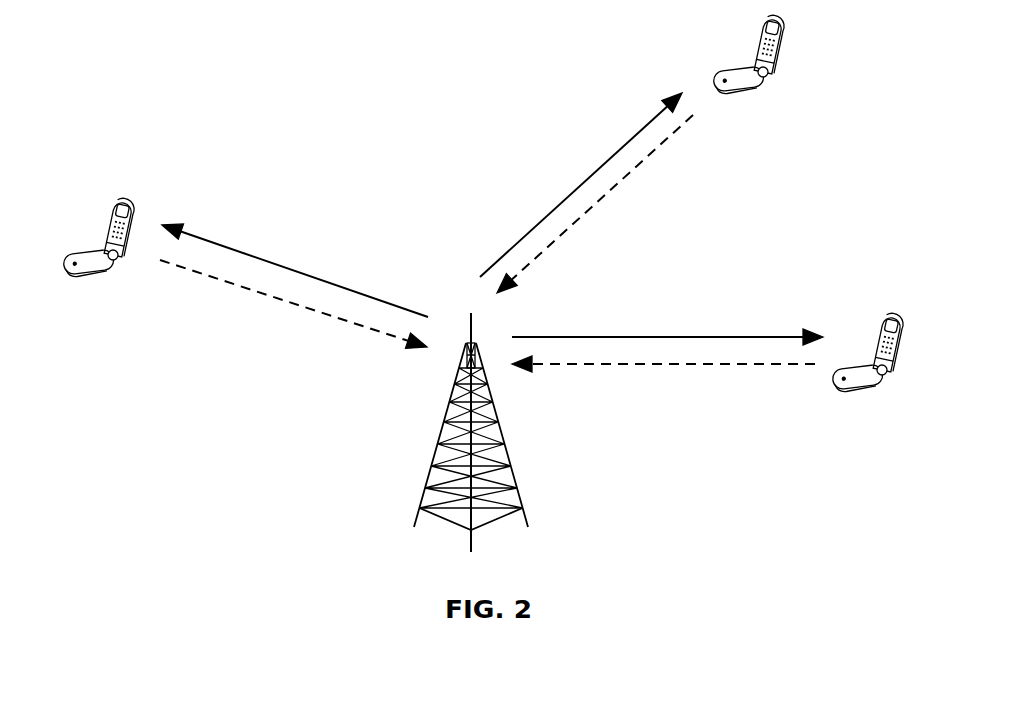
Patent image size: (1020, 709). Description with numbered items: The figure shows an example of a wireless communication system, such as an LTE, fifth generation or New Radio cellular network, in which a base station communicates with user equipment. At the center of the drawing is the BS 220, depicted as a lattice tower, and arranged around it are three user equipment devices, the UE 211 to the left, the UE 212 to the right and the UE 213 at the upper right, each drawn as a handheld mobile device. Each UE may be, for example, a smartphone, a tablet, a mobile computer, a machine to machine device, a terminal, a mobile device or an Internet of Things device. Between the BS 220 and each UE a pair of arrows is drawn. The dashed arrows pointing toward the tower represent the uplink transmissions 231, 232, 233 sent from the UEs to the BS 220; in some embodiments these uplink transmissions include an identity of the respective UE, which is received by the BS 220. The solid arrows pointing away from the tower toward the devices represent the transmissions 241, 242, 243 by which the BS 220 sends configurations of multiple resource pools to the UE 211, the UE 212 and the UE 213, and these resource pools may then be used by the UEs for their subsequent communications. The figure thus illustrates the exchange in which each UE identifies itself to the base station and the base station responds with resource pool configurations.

The user equipment 211 is at (112, 273).
The user equipment 212 is at (877, 387).
The user equipment 213 is at (762, 88).
The base station 220 is at (515, 488).
The uplink transmission 231 is at (322, 313).
The uplink transmission 232 is at (635, 367).
The uplink transmission 233 is at (617, 182).
The transmission 241 is at (245, 253).
The transmission 242 is at (753, 334).
The transmission 243 is at (613, 147).